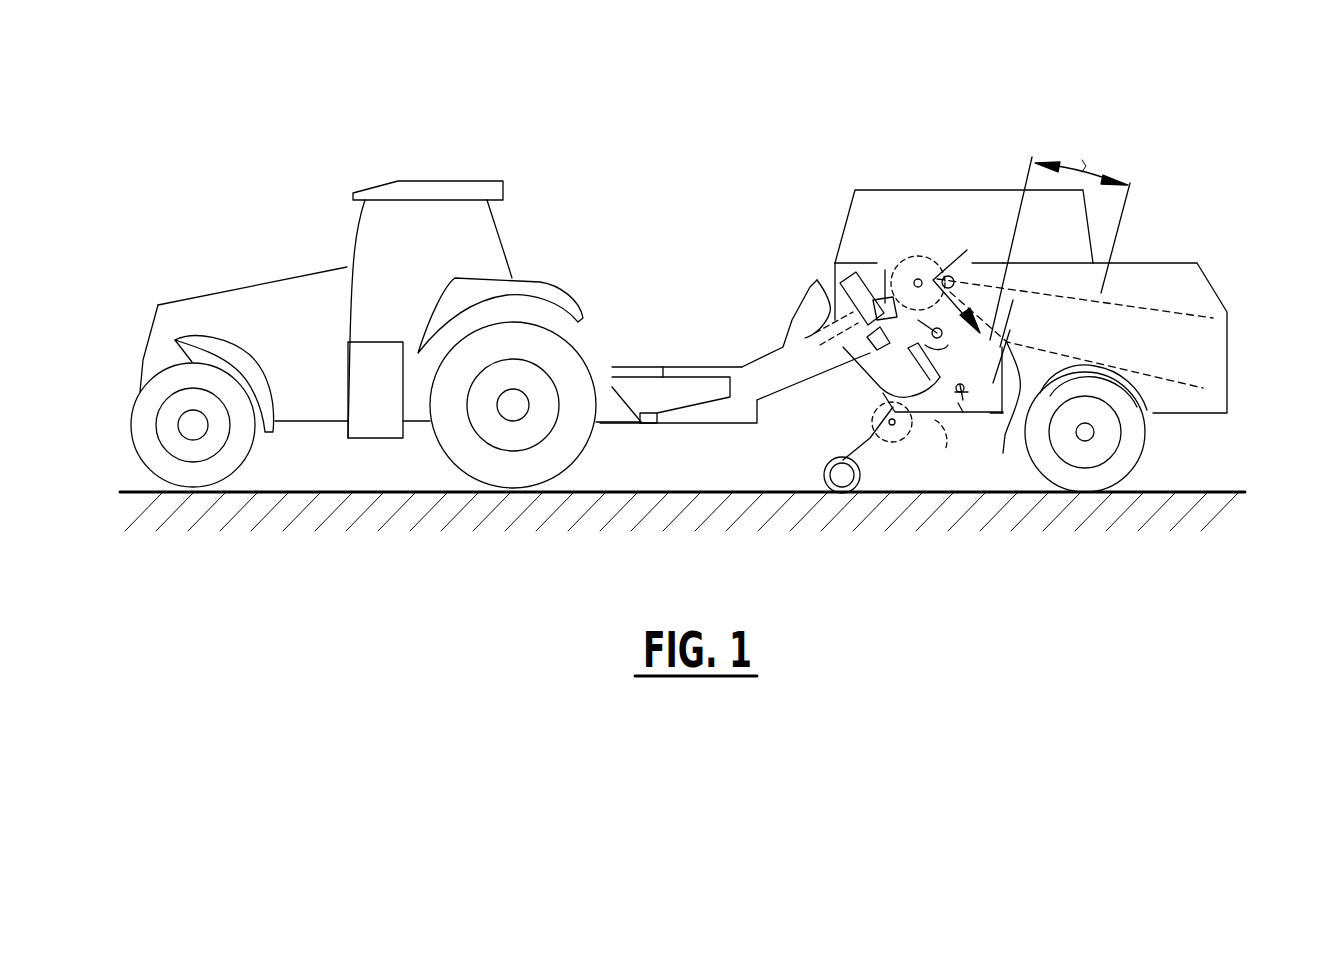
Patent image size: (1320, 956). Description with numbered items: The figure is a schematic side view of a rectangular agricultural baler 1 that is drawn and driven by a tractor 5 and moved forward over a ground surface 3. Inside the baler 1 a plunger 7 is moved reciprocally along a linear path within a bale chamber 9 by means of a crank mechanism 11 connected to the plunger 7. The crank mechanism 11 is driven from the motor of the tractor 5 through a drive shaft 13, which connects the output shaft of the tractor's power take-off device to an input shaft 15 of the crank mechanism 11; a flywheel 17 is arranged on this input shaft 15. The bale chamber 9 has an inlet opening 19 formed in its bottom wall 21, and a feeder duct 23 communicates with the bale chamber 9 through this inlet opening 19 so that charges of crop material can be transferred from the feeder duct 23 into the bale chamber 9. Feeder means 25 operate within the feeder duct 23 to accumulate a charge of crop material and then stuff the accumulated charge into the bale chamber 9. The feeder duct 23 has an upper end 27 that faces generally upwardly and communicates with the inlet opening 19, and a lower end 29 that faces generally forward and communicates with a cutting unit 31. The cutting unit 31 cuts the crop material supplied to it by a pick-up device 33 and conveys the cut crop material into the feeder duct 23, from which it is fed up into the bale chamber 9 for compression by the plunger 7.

The rectangular agricultural baler 1 is at (1015, 150).
The ground surface 3 is at (1170, 491).
The tractor 5 is at (270, 300).
The plunger 7 is at (1070, 332).
The bale chamber 9 is at (1190, 348).
The crank mechanism 11 is at (945, 222).
The drive shaft 13 is at (683, 360).
The input shaft 15 is at (840, 260).
The flywheel 17 is at (817, 280).
The inlet opening 19 is at (1007, 293).
The bottom wall 21 is at (1120, 388).
The feeder duct 23 is at (943, 423).
The feeder means 25 is at (883, 383).
The upper end 27 is at (967, 250).
The lower end 29 is at (917, 413).
The cutting unit 31 is at (878, 455).
The pick-up device 33 is at (853, 450).